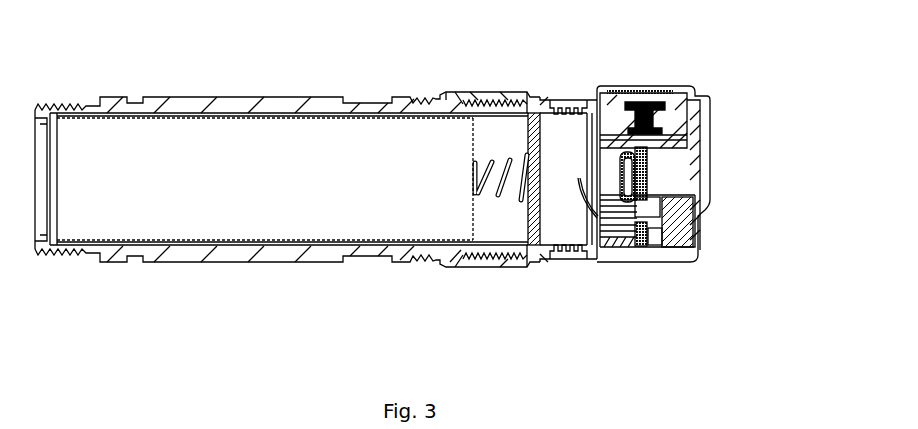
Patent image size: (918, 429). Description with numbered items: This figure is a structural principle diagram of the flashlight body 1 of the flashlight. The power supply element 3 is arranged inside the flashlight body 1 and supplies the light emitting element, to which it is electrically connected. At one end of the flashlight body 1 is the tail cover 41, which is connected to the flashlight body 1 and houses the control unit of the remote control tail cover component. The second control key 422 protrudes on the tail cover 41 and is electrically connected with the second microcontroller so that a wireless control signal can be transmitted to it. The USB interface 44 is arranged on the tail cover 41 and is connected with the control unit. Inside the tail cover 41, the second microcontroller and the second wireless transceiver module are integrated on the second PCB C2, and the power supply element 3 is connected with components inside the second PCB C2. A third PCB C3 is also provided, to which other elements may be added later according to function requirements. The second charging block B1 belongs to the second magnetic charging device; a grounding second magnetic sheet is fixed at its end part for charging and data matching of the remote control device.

The flashlight body 1 is at (172, 103).
The power supply element 3 is at (360, 152).
The tail cover 41 is at (568, 103).
The second control key 422 is at (647, 100).
The USB interface 44 is at (650, 175).
The second PCB C2 is at (640, 252).
The third PCB C3 is at (593, 253).
The second charging block B1 is at (668, 252).